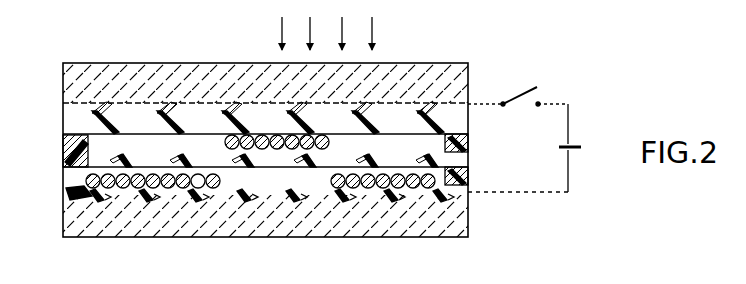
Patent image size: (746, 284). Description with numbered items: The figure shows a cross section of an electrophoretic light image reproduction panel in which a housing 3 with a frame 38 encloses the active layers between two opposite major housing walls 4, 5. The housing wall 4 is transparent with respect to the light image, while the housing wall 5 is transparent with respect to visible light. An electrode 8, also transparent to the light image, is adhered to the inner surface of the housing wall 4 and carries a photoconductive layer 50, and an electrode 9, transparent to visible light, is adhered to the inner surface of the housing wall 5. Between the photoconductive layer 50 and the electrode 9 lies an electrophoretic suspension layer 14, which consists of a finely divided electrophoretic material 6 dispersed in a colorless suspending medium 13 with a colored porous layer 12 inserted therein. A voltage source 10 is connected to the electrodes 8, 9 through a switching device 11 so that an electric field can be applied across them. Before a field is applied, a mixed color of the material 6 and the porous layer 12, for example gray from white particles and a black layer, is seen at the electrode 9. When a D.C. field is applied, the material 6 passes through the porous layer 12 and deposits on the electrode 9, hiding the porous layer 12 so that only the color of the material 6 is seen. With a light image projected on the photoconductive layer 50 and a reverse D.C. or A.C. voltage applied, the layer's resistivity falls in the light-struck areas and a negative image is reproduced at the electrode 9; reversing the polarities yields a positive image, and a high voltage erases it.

The housing 3 is at (60, 60).
The housing wall 4 is at (63, 79).
The electrode 8 is at (63, 105).
The photoconductive layer 50 is at (63, 128).
The frame 38 is at (63, 146).
The electrode 9 is at (68, 195).
The housing wall 5 is at (68, 221).
The colored porous layer 12 is at (166, 157).
The electrophoretic material 6 is at (198, 188).
The colorless suspending medium 13 is at (246, 188).
The electrophoretic suspension layer 14 is at (284, 183).
The switching device 11 is at (520, 100).
The voltage source 10 is at (578, 142).